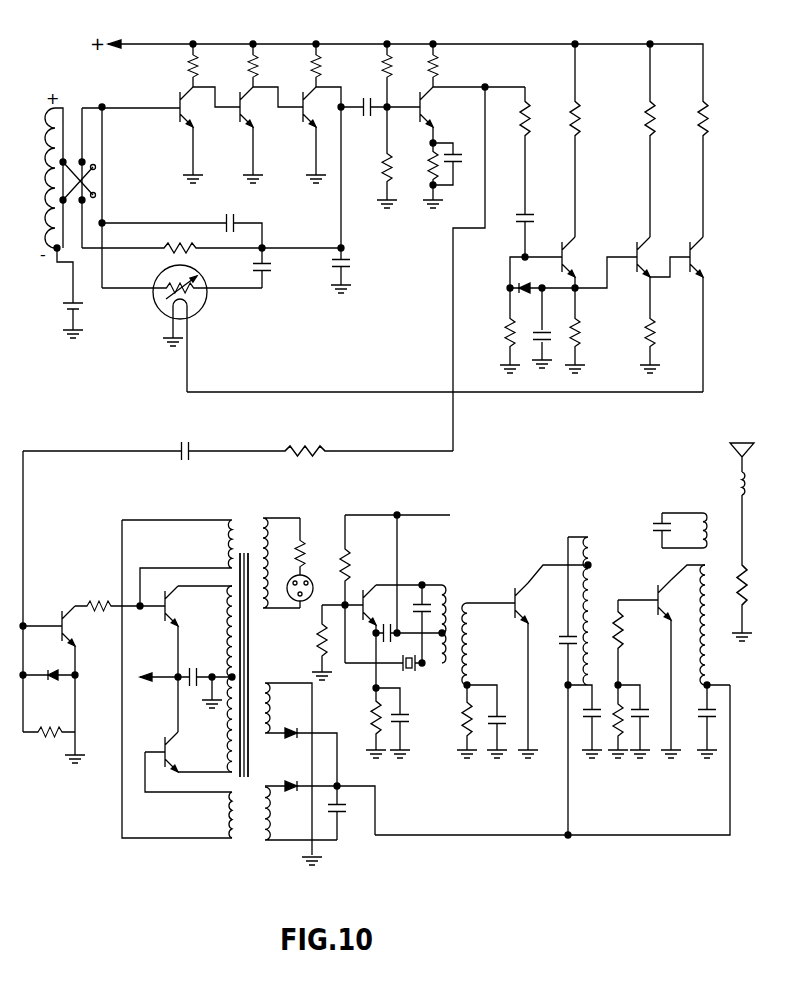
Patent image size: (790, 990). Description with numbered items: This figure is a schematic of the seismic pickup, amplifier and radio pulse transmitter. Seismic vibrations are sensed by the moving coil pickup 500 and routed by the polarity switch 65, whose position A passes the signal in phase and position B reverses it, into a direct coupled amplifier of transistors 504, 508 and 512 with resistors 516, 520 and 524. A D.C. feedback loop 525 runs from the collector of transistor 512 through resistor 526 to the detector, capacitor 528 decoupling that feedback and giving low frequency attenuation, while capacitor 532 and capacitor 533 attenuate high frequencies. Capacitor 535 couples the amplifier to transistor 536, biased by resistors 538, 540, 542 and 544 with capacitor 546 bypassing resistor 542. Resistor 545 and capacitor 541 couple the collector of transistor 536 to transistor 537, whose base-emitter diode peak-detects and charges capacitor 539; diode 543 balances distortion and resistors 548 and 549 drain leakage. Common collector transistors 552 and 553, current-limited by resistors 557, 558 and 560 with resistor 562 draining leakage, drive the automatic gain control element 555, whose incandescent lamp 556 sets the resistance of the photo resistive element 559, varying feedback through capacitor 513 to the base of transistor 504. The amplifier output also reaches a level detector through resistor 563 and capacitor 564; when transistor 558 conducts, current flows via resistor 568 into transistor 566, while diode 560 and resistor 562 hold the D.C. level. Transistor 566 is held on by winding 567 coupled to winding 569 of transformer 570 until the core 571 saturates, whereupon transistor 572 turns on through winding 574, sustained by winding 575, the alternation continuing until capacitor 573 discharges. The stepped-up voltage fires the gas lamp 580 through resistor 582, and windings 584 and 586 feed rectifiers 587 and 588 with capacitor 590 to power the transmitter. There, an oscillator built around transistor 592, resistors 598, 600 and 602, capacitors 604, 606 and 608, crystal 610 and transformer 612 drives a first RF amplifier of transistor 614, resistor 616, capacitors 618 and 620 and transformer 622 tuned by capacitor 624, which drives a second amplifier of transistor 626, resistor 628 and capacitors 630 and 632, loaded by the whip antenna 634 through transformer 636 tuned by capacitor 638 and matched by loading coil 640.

The moving coil pickup 500 is at (50, 204).
The polarity switch 65 is at (95, 168).
The transistor 504 is at (187, 120).
The transistor 508 is at (248, 120).
The transistor 512 is at (341, 106).
The capacitor 513 is at (270, 270).
The resistor 516 is at (196, 66).
The resistor 520 is at (258, 66).
The resistor 524 is at (321, 66).
The D.C. feedback loop 525 is at (268, 248).
The resistor 526 is at (158, 246).
The capacitor 528 is at (84, 306).
The capacitor 532 is at (236, 214).
The capacitor 533 is at (345, 256).
The capacitor 535 is at (366, 112).
The transistor 536 is at (430, 104).
The transistor 537 is at (580, 262).
The resistor 538 is at (392, 66).
The capacitor 539 is at (552, 345).
The resistor 540 is at (391, 174).
The capacitor 541 is at (532, 223).
The resistor 542 is at (432, 172).
The diode 543 is at (518, 282).
The resistor 544 is at (444, 66).
The resistor 545 is at (528, 126).
The capacitor 546 is at (468, 170).
The resistor 548 is at (505, 330).
The resistor 549 is at (585, 326).
The transistor 552 is at (648, 262).
The transistor 553 is at (707, 262).
The automatic gain control element 555 is at (206, 302).
The incandescent lamp 556 is at (195, 325).
The resistor 557 is at (582, 126).
The resistor / level detecting transistor 558 is at (656, 126).
The photo resistive element 559 is at (199, 286).
The resistor / diode 560 is at (712, 126).
The resistor 562 is at (655, 326).
The resistor 563 is at (303, 460).
The capacitor 564 is at (186, 462).
The transistor 566 is at (180, 614).
The winding 567 is at (222, 542).
The resistor 568 is at (104, 600).
The winding 569 is at (222, 626).
The transformer 570 is at (242, 536).
The core 571 is at (250, 645).
The transistor 572 is at (178, 758).
The capacitor 573 is at (212, 662).
The winding 574 is at (222, 812).
The winding 575 is at (223, 725).
The gas lamp 580 is at (312, 582).
The resistor 582 is at (303, 535).
The winding 584 is at (270, 718).
The winding 586 is at (270, 834).
The rectifier 587 is at (292, 738).
The rectifier 588 is at (292, 782).
The capacitor 590 is at (348, 815).
The transistor 592 is at (388, 584).
The resistor 598 is at (357, 565).
The resistor 600 is at (320, 650).
The resistor 602 is at (372, 705).
The capacitor 604 is at (410, 708).
The capacitor 606 is at (428, 598).
The capacitor 608 is at (408, 636).
The crystal 610 is at (412, 672).
The transformer 612 is at (458, 614).
The transistor 614 is at (518, 589).
The resistor 616 is at (462, 742).
The capacitor 618 is at (500, 708).
The capacitor 620 is at (576, 722).
The transformer 622 is at (600, 602).
The capacitor 624 is at (559, 641).
The transistor 626 is at (661, 593).
The resistor 628 is at (625, 745).
The capacitor 630 is at (643, 704).
The capacitor 632 is at (717, 713).
The whip antenna 634 is at (728, 455).
The transformer 636 is at (724, 584).
The capacitor 638 is at (653, 528).
The loading coil 640 is at (728, 488).